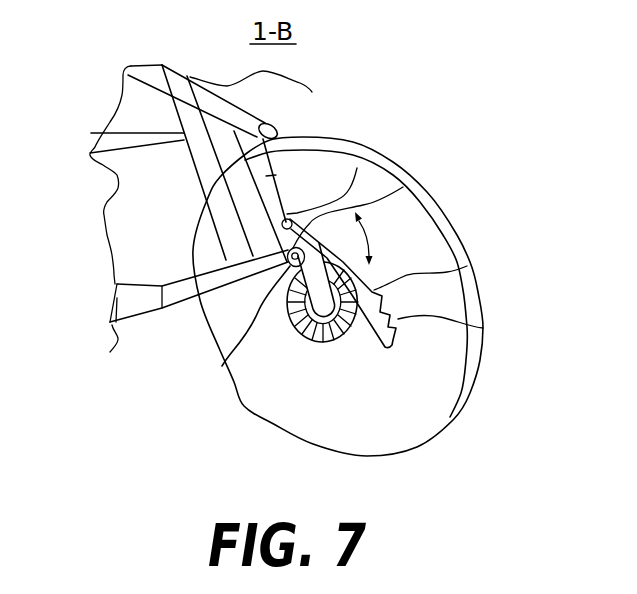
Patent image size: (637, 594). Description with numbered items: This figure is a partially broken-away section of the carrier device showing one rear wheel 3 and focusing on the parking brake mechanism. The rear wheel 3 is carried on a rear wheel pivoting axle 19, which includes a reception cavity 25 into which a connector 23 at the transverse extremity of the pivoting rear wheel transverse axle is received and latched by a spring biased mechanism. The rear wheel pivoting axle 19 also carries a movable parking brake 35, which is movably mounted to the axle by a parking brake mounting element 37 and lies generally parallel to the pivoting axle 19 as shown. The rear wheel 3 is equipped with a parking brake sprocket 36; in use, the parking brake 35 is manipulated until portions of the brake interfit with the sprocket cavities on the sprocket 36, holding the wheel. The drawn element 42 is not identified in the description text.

The rear wheel 3 is at (427, 403).
The rear wheel pivoting axle 19 is at (292, 140).
The connector 23 is at (227, 352).
The rear wheel pivoting axle reception cavity 25 is at (403, 187).
The movable parking brake 35 is at (467, 266).
The parking brake sprocket 36 is at (304, 338).
The parking brake mounting element 37 is at (357, 168).
The ratchet teeth 42 is at (483, 328).